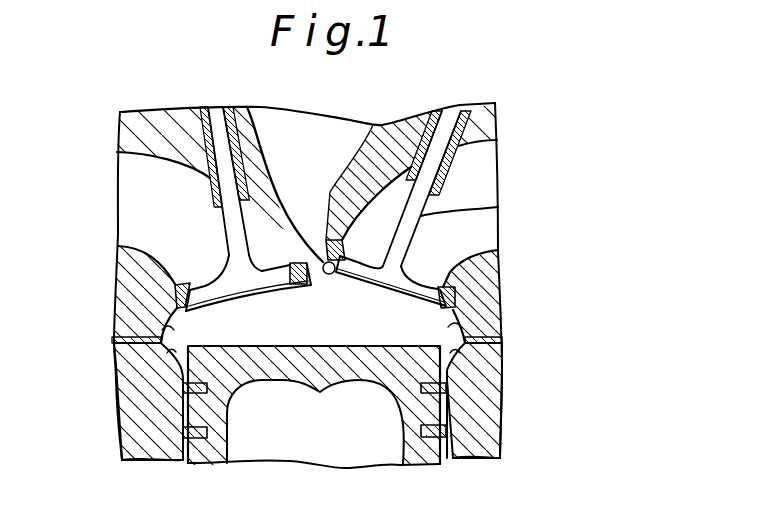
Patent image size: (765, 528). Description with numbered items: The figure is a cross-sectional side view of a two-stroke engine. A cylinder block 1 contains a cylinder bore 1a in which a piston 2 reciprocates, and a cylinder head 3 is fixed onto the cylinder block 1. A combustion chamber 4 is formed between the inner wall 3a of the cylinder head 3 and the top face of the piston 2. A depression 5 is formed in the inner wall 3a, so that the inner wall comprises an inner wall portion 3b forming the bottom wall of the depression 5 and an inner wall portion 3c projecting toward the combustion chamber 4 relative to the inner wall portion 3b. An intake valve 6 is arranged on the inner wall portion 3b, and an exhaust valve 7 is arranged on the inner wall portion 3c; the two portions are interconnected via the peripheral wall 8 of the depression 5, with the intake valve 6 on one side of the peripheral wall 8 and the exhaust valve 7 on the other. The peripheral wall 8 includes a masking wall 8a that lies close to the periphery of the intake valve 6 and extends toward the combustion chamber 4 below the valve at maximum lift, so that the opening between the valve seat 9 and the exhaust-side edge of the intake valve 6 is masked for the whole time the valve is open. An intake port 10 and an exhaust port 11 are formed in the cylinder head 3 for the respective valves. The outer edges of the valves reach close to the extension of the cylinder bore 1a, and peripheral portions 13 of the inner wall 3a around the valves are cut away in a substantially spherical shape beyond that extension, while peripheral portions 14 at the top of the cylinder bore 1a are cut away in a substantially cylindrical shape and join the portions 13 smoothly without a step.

The cylinder block 1 is at (458, 446).
The cylinder bore 1a is at (449, 414).
The piston 2 is at (428, 457).
The cylinder head 3 is at (497, 281).
The inner wall of the cylinder head 3a is at (320, 285).
The inner wall portion forming the bottom wall of the depression 3b is at (441, 313).
The inner wall portion projecting toward the combustion chamber 3c is at (182, 308).
The combustion chamber 4 is at (273, 333).
The depression 5 is at (353, 285).
The intake valve 6 is at (487, 213).
The exhaust valve 7 is at (228, 222).
The peripheral wall of the depression 8 is at (331, 276).
The masking wall 8a is at (316, 238).
The valve seat 9 is at (498, 301).
The intake port 10 is at (473, 181).
The exhaust port 11 is at (138, 192).
The peripheral cut away portion of the cylinder head inner wall 13 is at (160, 331).
The peripheral cut away portion of the top of the cylinder bore 14 is at (135, 375).